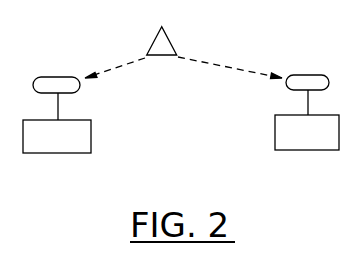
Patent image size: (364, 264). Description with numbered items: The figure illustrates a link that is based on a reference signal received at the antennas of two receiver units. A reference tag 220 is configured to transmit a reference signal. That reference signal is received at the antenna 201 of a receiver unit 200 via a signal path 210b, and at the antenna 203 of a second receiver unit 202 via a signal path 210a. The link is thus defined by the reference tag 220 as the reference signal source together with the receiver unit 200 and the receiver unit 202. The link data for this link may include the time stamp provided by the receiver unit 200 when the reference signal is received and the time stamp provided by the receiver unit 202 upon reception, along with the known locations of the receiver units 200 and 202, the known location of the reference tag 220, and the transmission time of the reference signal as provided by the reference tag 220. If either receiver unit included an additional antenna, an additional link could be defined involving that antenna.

The receiver unit 200 is at (57, 123).
The antenna 201 is at (56, 85).
The receiver unit 202 is at (307, 120).
The antenna 203 is at (307, 82).
The signal path 210a is at (224, 65).
The signal path 210b is at (123, 64).
The reference tag 220 is at (169, 42).